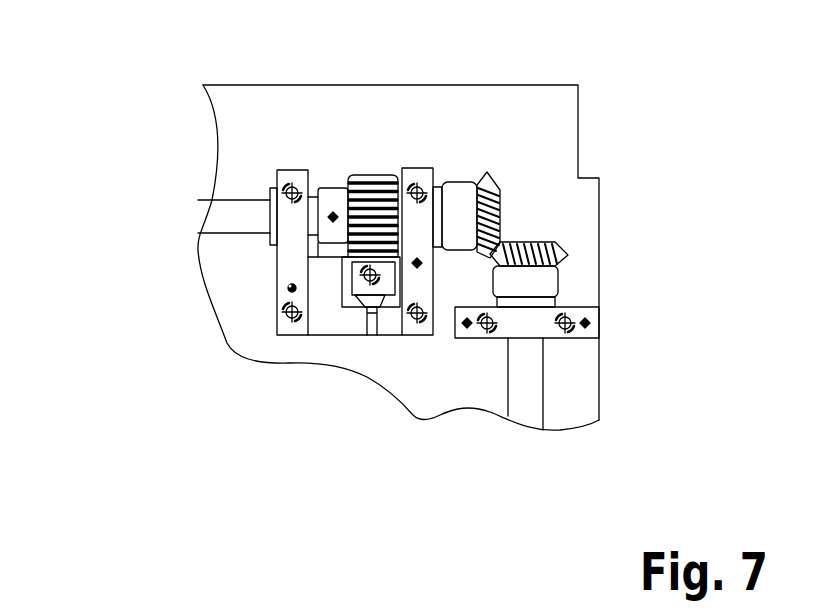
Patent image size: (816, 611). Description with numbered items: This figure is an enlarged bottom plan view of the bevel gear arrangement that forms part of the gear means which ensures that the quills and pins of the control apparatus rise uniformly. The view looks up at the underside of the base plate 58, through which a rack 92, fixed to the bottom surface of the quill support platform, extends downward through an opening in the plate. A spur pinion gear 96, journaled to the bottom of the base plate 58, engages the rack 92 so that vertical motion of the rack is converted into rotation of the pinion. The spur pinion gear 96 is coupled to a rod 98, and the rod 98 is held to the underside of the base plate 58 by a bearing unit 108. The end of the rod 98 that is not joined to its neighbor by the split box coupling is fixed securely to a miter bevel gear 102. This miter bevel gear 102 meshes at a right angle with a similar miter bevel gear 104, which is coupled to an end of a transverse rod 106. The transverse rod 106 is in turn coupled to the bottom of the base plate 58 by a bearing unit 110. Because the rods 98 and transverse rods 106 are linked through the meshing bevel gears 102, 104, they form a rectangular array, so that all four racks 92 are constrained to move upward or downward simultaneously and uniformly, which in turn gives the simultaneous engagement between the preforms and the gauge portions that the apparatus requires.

The base plate 58 is at (237, 325).
The rack 92 is at (355, 290).
The spur pinion gear 96 is at (362, 183).
The rod 98 is at (223, 217).
The miter bevel gear 102 is at (488, 175).
The miter bevel gear 104 is at (560, 242).
The transverse rod 106 is at (533, 408).
The bearing unit 108 is at (277, 170).
The bearing unit 110 is at (593, 338).